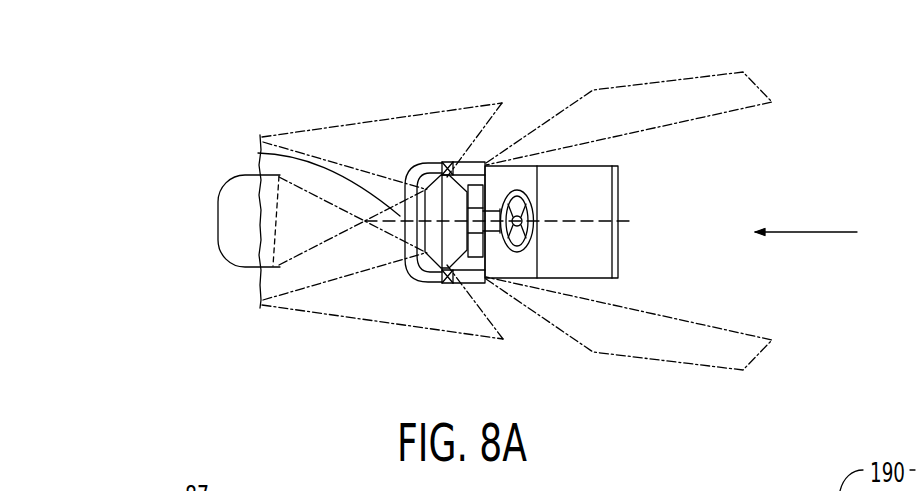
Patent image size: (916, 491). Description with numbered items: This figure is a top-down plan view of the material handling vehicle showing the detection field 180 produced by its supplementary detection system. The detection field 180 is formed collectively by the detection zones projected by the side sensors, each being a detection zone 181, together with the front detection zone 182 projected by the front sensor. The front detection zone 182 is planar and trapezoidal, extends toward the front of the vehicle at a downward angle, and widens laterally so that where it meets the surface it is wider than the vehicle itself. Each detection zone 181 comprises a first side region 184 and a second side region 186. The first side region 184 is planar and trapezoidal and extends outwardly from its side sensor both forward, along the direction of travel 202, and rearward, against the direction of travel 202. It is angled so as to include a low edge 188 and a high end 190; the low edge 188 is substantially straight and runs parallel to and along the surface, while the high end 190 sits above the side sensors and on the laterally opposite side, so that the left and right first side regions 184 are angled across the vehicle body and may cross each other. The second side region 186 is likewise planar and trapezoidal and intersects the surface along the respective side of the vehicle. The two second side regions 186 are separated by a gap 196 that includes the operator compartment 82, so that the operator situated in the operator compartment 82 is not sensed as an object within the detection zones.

The operator compartment 82 is at (590, 183).
The detection field 180 is at (180, 210).
The detection zone 181 is at (318, 55).
The front detection zone 182 is at (258, 153).
The first side region 184 is at (345, 135).
The second side region 186 is at (683, 112).
The low edge 188 is at (318, 126).
The high end 190 is at (241, 221).
The gap 196 is at (758, 187).
The direction of travel 202 is at (812, 231).